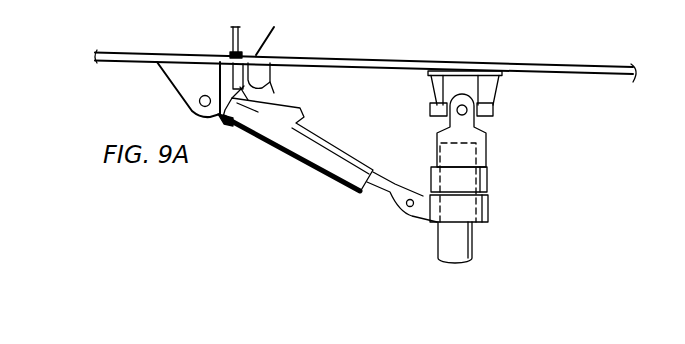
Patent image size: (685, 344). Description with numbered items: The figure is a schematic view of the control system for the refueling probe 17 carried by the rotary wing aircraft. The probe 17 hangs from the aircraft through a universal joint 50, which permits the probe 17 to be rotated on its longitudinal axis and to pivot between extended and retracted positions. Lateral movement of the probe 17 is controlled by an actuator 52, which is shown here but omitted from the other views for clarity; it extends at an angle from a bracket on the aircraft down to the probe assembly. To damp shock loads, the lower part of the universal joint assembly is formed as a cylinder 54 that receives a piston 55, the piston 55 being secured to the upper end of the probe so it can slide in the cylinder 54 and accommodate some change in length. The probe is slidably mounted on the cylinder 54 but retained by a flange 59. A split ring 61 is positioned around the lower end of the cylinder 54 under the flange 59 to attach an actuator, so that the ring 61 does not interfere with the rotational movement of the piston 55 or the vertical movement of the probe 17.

The maneuverable probe 17 is at (497, 256).
The universal joint 50 is at (490, 111).
The actuator 52 is at (300, 148).
The cylinder 54 is at (440, 134).
The piston 55 is at (438, 238).
The flange 59 is at (488, 181).
The split ring 61 is at (488, 208).